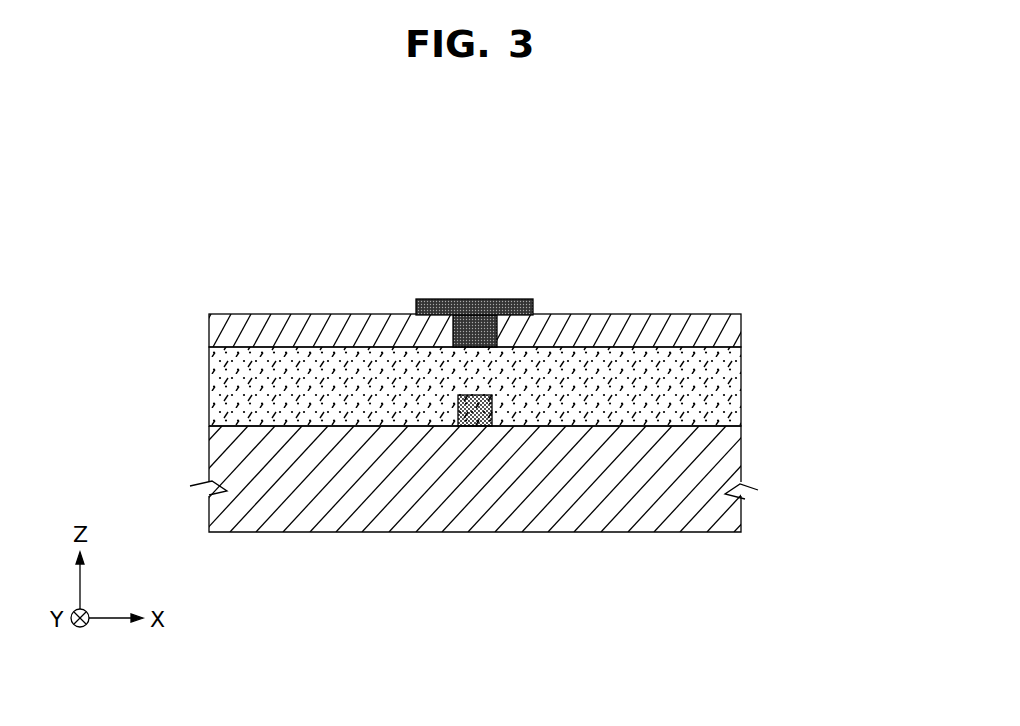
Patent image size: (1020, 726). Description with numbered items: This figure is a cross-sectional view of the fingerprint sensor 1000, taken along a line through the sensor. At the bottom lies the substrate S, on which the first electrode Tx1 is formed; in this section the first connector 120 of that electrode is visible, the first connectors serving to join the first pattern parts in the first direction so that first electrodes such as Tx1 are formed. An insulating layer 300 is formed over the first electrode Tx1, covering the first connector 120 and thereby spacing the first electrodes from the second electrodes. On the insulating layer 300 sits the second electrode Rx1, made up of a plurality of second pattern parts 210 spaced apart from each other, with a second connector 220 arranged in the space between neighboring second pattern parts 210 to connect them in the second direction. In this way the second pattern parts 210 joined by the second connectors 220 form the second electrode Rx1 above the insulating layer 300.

The electronic device / display apparatus 1000 is at (595, 193).
The second pattern part 210 is at (725, 332).
The second connector 220 is at (476, 299).
The insulating layer 300 is at (725, 390).
The first connector 120 is at (475, 413).
The substrate S is at (725, 462).
The second electrode Rx1 is at (188, 338).
The first electrode Tx1 is at (188, 412).